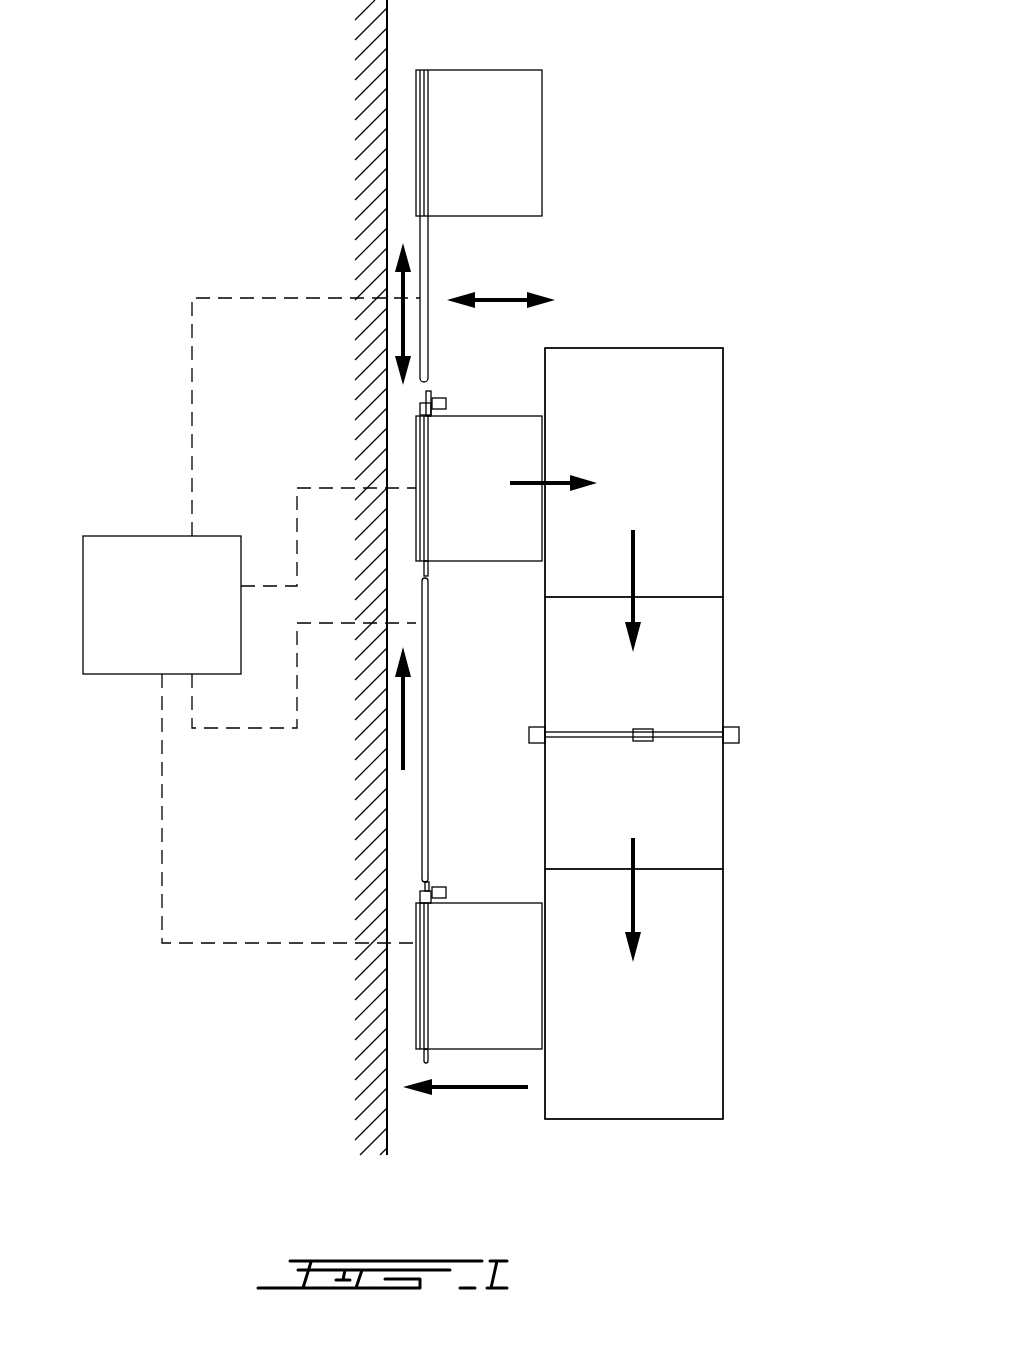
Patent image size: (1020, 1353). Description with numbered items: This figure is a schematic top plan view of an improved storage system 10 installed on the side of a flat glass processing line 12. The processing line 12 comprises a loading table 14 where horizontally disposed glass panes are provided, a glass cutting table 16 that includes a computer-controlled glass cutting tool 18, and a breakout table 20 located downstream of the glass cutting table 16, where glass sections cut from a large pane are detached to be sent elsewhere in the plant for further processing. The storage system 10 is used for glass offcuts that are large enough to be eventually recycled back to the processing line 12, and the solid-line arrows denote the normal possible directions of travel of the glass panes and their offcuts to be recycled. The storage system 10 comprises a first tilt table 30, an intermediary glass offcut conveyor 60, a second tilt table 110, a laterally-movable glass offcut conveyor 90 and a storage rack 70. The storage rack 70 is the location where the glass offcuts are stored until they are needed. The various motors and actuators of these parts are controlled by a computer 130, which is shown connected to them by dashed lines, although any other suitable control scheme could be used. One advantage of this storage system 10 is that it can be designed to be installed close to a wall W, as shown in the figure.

The wall W is at (388, 33).
The storage system 10 is at (270, 1047).
The flat glass processing line 12 is at (667, 1125).
The loading table 14 is at (685, 365).
The glass cutting table 16 is at (570, 680).
The computer-controlled glass cutting tool 18 is at (642, 738).
The breakout table 20 is at (568, 1097).
The first tilt table 30 is at (453, 1006).
The intermediary glass offcut conveyor 60 is at (422, 843).
The storage rack 70 is at (505, 130).
The laterally-movable glass offcut conveyor 90 is at (487, 568).
The second tilt table 110 is at (448, 460).
The computer 130 is at (109, 656).